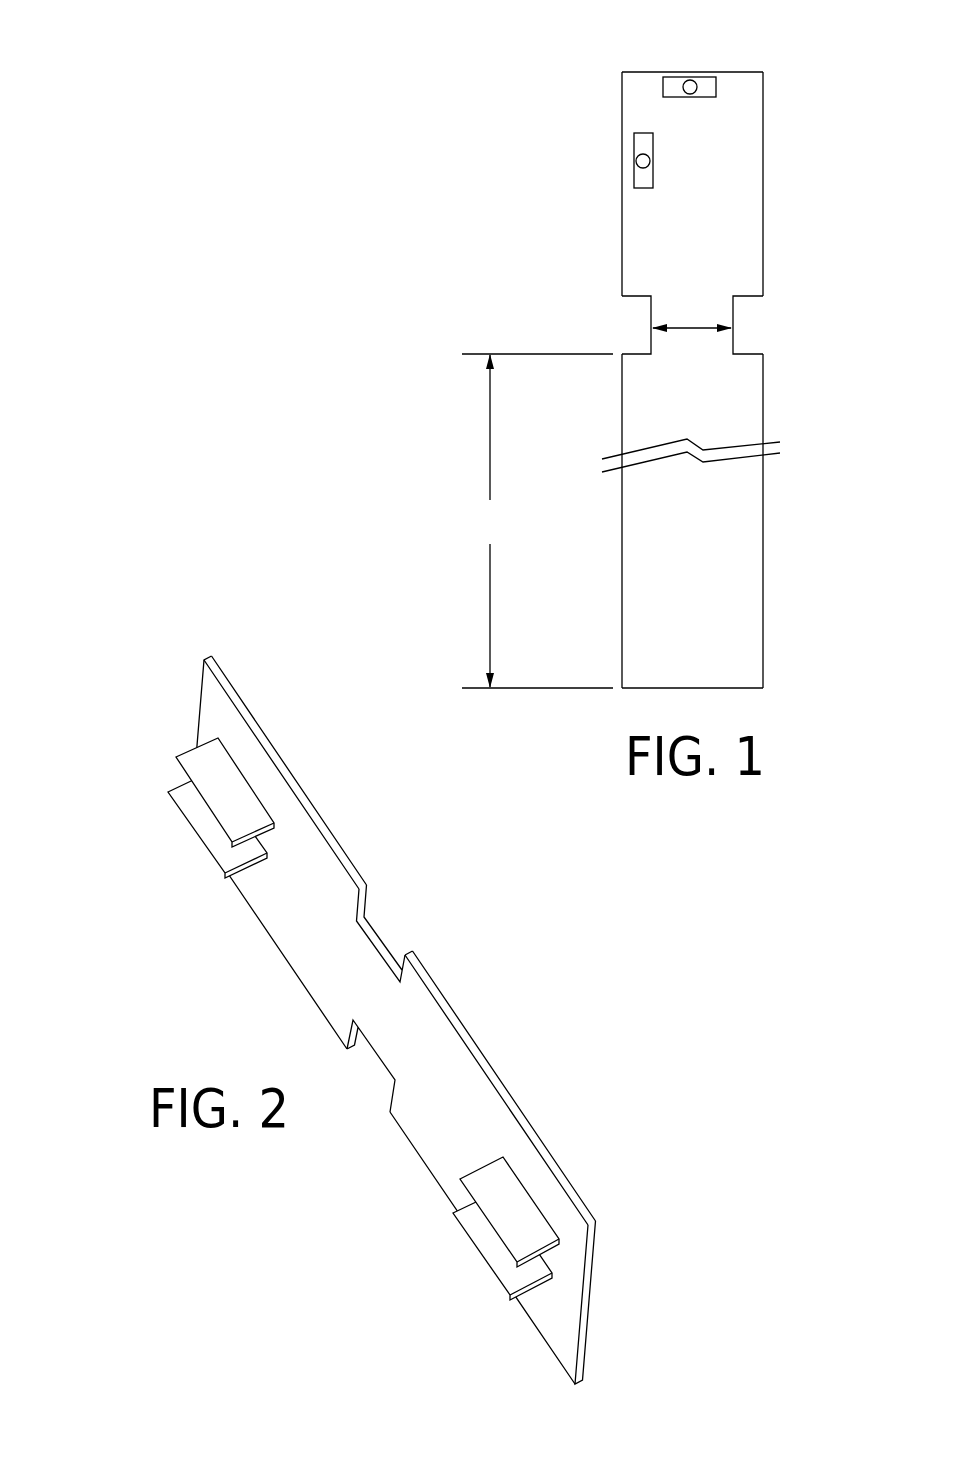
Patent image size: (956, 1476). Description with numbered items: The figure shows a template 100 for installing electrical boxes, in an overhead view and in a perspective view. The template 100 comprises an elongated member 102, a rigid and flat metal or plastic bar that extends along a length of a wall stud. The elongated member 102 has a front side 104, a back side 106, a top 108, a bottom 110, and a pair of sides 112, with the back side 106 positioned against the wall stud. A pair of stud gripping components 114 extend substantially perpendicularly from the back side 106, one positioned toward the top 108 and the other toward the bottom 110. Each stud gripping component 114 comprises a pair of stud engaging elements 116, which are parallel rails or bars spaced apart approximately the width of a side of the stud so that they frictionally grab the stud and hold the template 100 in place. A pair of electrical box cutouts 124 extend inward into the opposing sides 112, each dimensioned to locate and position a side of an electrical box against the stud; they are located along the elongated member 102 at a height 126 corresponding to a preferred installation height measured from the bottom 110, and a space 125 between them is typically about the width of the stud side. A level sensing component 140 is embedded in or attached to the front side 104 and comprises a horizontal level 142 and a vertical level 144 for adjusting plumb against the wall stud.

In FIG. 1, the template 100 is at (790, 213).
In FIG. 2, the template 100 is at (640, 940).
In FIG. 1, the elongated member 102 is at (790, 497).
In FIG. 2, the elongated member 102 is at (348, 855).
In FIG. 1, the front side 104 is at (672, 565).
In FIG. 2, the back side 106 is at (443, 1082).
In FIG. 1, the top 108 is at (651, 72).
In FIG. 2, the top 108 is at (200, 698).
In FIG. 1, the bottom 110 is at (745, 688).
In FIG. 2, the bottom 110 is at (585, 1295).
In FIG. 1, the pair of sides 112 is at (623, 407).
In FIG. 2, the pair of sides 112 is at (455, 1022).
In FIG. 2, the stud gripping component 114 is at (140, 795).
In FIG. 2, the stud engaging elements 116 is at (200, 840).
In FIG. 1, the electrical box cutout 124 is at (640, 327).
In FIG. 2, the electrical box cutout 124 is at (385, 933).
In FIG. 1, the space 125 is at (692, 327).
In FIG. 1, the height 126 is at (478, 522).
In FIG. 1, the level sensing component 140 is at (772, 53).
In FIG. 1, the horizontal level 142 is at (716, 85).
In FIG. 1, the vertical level 144 is at (637, 163).